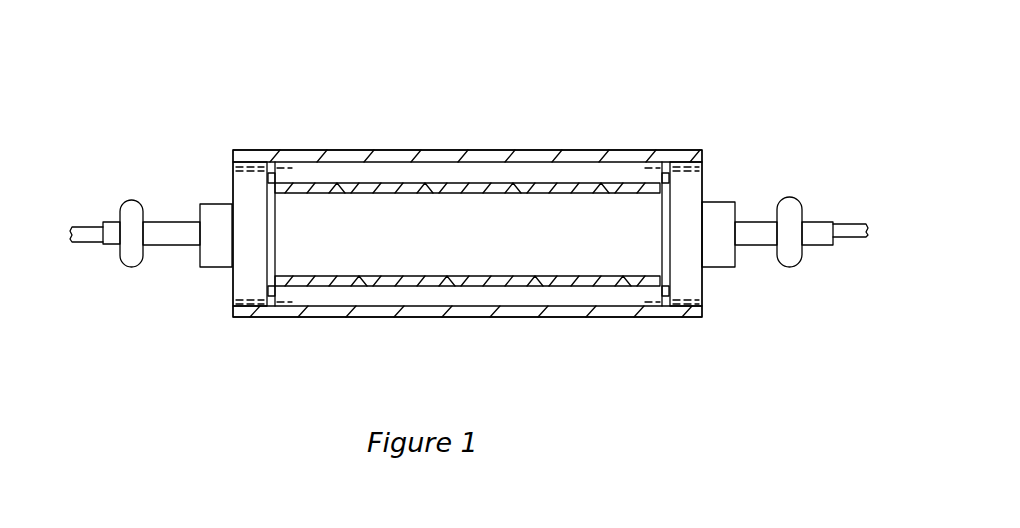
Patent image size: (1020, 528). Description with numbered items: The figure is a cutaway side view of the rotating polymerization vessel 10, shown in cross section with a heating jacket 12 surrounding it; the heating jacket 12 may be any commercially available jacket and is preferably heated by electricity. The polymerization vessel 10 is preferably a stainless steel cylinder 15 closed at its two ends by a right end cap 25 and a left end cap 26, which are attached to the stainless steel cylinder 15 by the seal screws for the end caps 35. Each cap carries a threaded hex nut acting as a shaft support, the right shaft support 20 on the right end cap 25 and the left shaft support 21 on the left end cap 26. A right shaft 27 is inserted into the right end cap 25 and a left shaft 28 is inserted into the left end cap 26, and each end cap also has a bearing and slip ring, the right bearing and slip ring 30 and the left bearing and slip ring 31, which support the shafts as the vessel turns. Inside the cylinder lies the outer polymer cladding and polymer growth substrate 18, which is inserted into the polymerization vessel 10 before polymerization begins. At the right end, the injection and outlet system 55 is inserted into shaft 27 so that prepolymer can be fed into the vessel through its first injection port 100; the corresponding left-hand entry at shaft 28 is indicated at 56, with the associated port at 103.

The polymerization vessel 10 is at (478, 121).
The heating jacket 12 is at (337, 150).
The stainless steel cylinder 15 is at (585, 317).
The outer polymer cladding and polymer growth substrate 18 is at (575, 183).
The threaded hex nut (shaft support) 20 is at (713, 202).
The threaded hex nut (shaft support) 21 is at (214, 204).
The right end cap 25 is at (702, 184).
The left end cap 26 is at (232, 182).
The shaft 27 is at (767, 246).
The shaft 28 is at (163, 246).
The bearing and slip ring 30 is at (780, 267).
The bearing and slip ring 31 is at (118, 267).
The seal screws for the end caps 35 is at (247, 162).
The injection and outlet system 55 is at (829, 212).
The left end 56 is at (79, 212).
The first injection port 100 is at (853, 240).
The left shaft end 103 is at (88, 243).